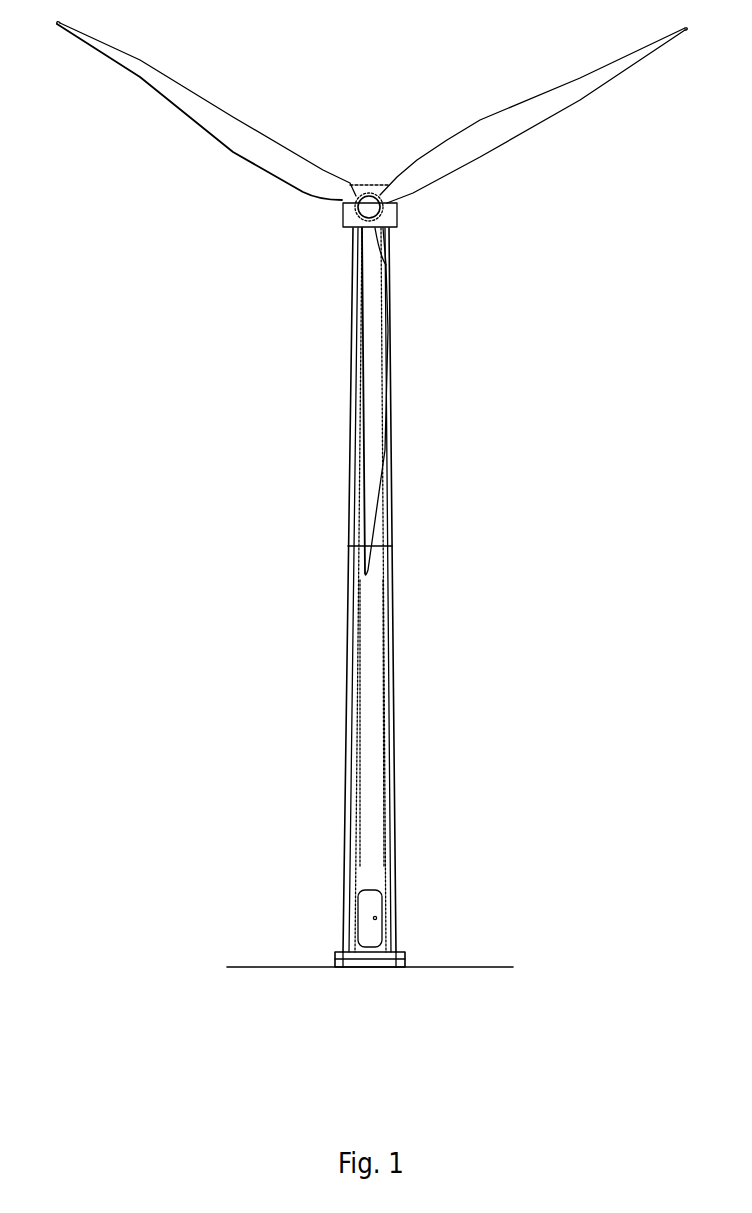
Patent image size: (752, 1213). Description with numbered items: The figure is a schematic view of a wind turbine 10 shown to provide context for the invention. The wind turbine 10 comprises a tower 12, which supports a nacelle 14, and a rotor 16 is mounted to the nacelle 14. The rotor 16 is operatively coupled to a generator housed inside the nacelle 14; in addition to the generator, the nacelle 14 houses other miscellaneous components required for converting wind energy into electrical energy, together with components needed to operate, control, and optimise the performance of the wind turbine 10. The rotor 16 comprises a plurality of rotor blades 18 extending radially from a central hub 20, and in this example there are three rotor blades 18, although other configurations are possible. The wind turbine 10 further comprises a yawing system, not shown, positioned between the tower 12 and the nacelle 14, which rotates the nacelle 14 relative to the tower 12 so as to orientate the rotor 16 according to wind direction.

The wind turbine 10 is at (233, 485).
The tower 12 is at (392, 682).
The nacelle 14 is at (397, 215).
The rotor 16 is at (233, 258).
The rotor blades 18 is at (233, 118).
The central hub 20 is at (372, 195).